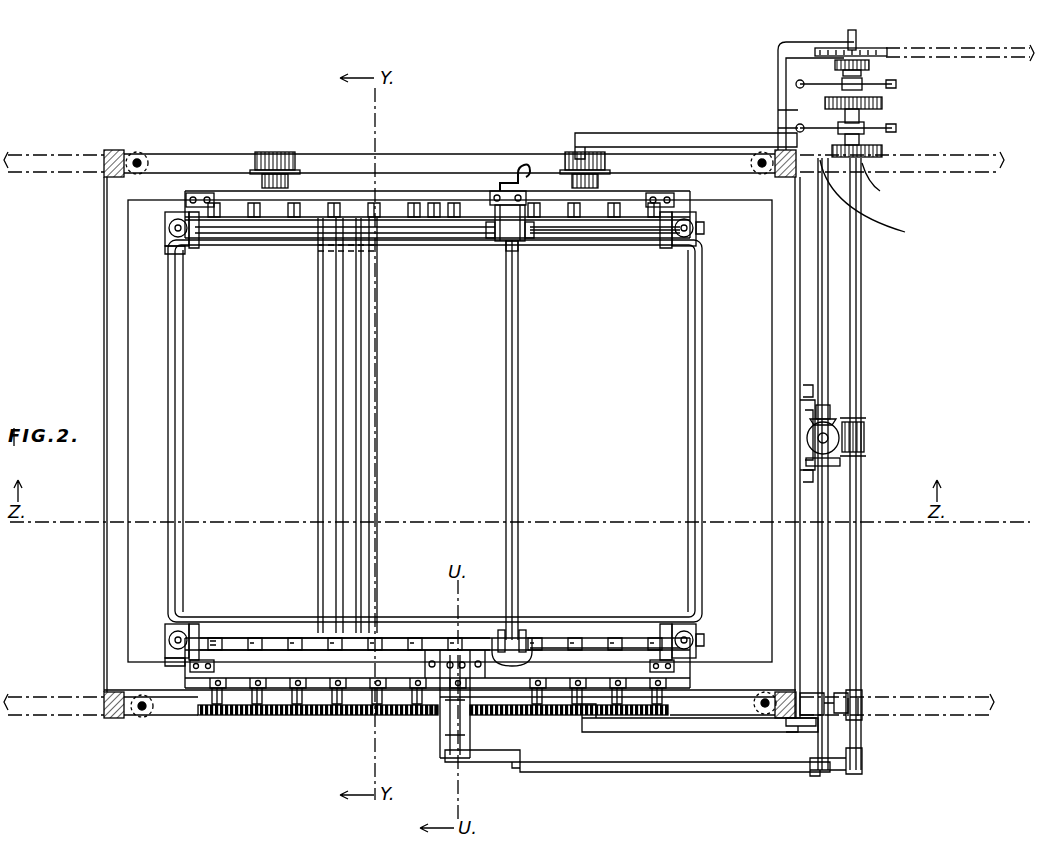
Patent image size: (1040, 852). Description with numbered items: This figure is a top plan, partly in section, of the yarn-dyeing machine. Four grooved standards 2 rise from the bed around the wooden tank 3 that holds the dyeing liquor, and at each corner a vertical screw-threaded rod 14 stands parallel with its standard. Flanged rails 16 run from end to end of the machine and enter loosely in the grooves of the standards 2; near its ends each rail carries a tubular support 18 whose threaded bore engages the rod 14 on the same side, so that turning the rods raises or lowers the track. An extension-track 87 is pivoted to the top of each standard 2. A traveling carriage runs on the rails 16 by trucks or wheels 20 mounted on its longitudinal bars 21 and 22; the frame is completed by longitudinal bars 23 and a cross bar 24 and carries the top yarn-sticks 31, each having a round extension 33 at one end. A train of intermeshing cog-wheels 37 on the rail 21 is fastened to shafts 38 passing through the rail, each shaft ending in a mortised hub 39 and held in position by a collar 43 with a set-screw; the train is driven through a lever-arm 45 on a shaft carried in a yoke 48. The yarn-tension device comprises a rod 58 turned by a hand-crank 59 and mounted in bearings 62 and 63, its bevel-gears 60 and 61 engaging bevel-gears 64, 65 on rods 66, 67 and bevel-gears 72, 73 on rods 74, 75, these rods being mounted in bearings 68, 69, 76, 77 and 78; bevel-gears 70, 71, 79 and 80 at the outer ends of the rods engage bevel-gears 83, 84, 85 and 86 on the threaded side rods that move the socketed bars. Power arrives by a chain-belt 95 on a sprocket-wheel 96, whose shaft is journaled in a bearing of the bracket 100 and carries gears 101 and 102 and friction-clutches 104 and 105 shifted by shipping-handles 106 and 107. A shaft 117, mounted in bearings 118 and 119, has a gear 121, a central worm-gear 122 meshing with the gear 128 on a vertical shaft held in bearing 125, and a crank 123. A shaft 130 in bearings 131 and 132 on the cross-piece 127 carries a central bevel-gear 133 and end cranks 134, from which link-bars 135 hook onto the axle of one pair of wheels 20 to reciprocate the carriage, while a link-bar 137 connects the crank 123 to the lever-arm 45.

The standard 2 is at (118, 152).
The tank 3 is at (450, 431).
The screw-threaded rod 14 is at (142, 718).
The rail 16 is at (449, 435).
The tubular support 18 is at (145, 157).
The truck wheel 20 is at (282, 150).
The longitudinal bar 21 is at (318, 686).
The longitudinal bar 22 is at (437, 214).
The longitudinal bar 23 is at (605, 439).
The cross bar 24 is at (435, 431).
The top yarn-stick 31 is at (351, 425).
The cylindrical extension 33 is at (434, 207).
The cog-wheel 37 is at (569, 720).
The shaft 38 is at (432, 716).
The hub 39 is at (570, 636).
The clip 43 is at (429, 207).
The lever-arm 45 is at (482, 766).
The yoke 48 is at (442, 730).
The rod 58 is at (525, 440).
The hand-crank 59 is at (524, 168).
The bevel-gear 60 is at (514, 252).
The bevel-gear 61 is at (530, 660).
The bearing 62 is at (524, 200).
The bearing 63 is at (437, 663).
The bevel-gear 64 is at (495, 238).
The bevel-gear 65 is at (530, 240).
The rod 66 is at (428, 236).
The rod 67 is at (630, 236).
The bearing 68 is at (212, 200).
The bearing 69 is at (646, 200).
The bevel-gear 70 is at (192, 246).
The bevel-gear 71 is at (704, 228).
The bevel-gear 72 is at (500, 630).
The bevel-gear 73 is at (528, 632).
The rod 74 is at (275, 636).
The rod 75 is at (630, 636).
The bearing 76 is at (214, 666).
The bearing 77 is at (480, 636).
The bearing 78 is at (660, 666).
The bevel-gear 79 is at (196, 630).
The bevel-gear 80 is at (704, 636).
The bevel-gear 83 is at (170, 230).
The bevel-gear 84 is at (696, 244).
The bevel-gear 85 is at (166, 640).
The bevel-gear 86 is at (694, 626).
The extension-track 87 is at (504, 433).
The chain-belt 95 is at (960, 62).
The sprocket-wheel 96 is at (854, 39).
The bracket 100 is at (816, 85).
The gear 101 is at (870, 64).
The gear 102 is at (884, 105).
The friction-clutch 104 is at (868, 132).
The friction-clutch 105 is at (866, 90).
The shipping-handle 106 is at (900, 126).
The shipping-handle 107 is at (898, 84).
The shaft 117 is at (862, 318).
The bearing 118 is at (887, 187).
The bearing 119 is at (864, 708).
The gear 121 is at (884, 151).
The worm-gear 122 is at (872, 437).
The crank 123 is at (838, 772).
The bearing 125 is at (800, 435).
The cross-piece 127 is at (800, 503).
The gear 128 is at (840, 455).
The shaft 130 is at (822, 270).
The bearing 131 is at (867, 202).
The bearing 132 is at (812, 698).
The bevel-gear 133 is at (834, 408).
The crank 134 is at (810, 734).
The link-bar 135 is at (696, 432).
The link-bar 137 is at (675, 778).